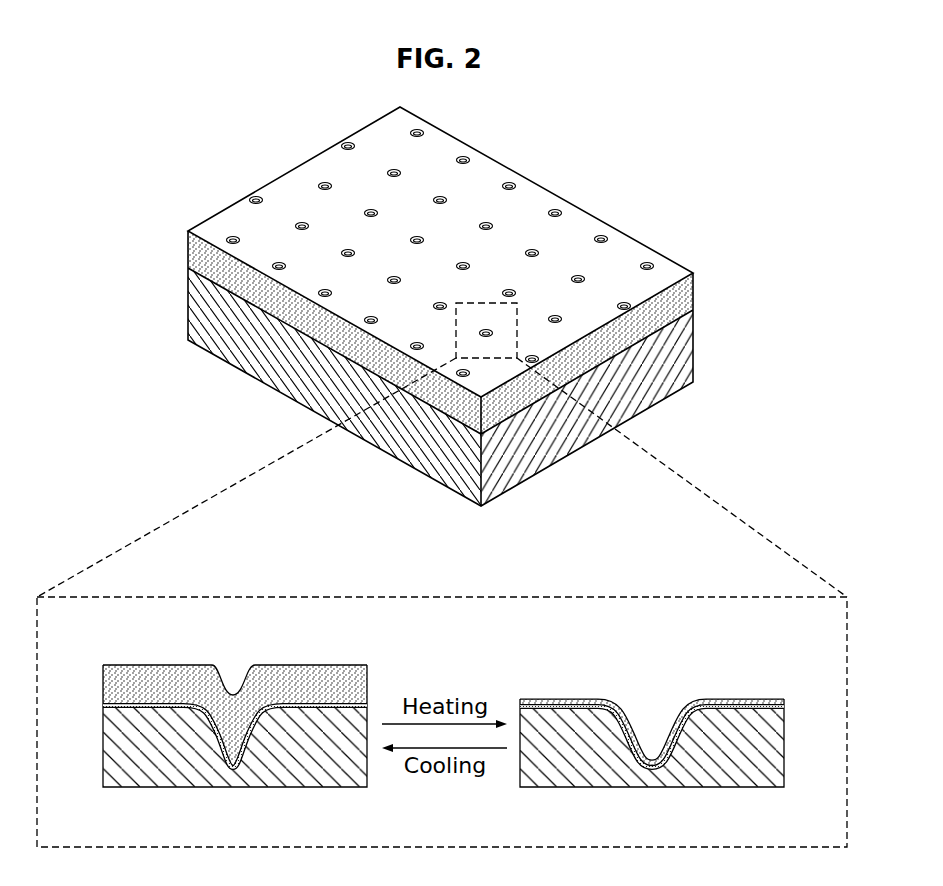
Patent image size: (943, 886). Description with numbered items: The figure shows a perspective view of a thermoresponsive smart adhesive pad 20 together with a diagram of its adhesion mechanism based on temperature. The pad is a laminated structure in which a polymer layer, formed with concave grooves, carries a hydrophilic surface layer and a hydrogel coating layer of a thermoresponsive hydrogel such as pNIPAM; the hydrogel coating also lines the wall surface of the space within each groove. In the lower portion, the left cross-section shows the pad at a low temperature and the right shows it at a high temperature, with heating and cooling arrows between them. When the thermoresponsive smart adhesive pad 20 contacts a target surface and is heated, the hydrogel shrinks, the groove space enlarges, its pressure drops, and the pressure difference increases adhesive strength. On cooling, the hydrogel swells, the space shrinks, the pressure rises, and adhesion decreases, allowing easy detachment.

The thermoresponsive smart adhesive pad 20 is at (600, 196).